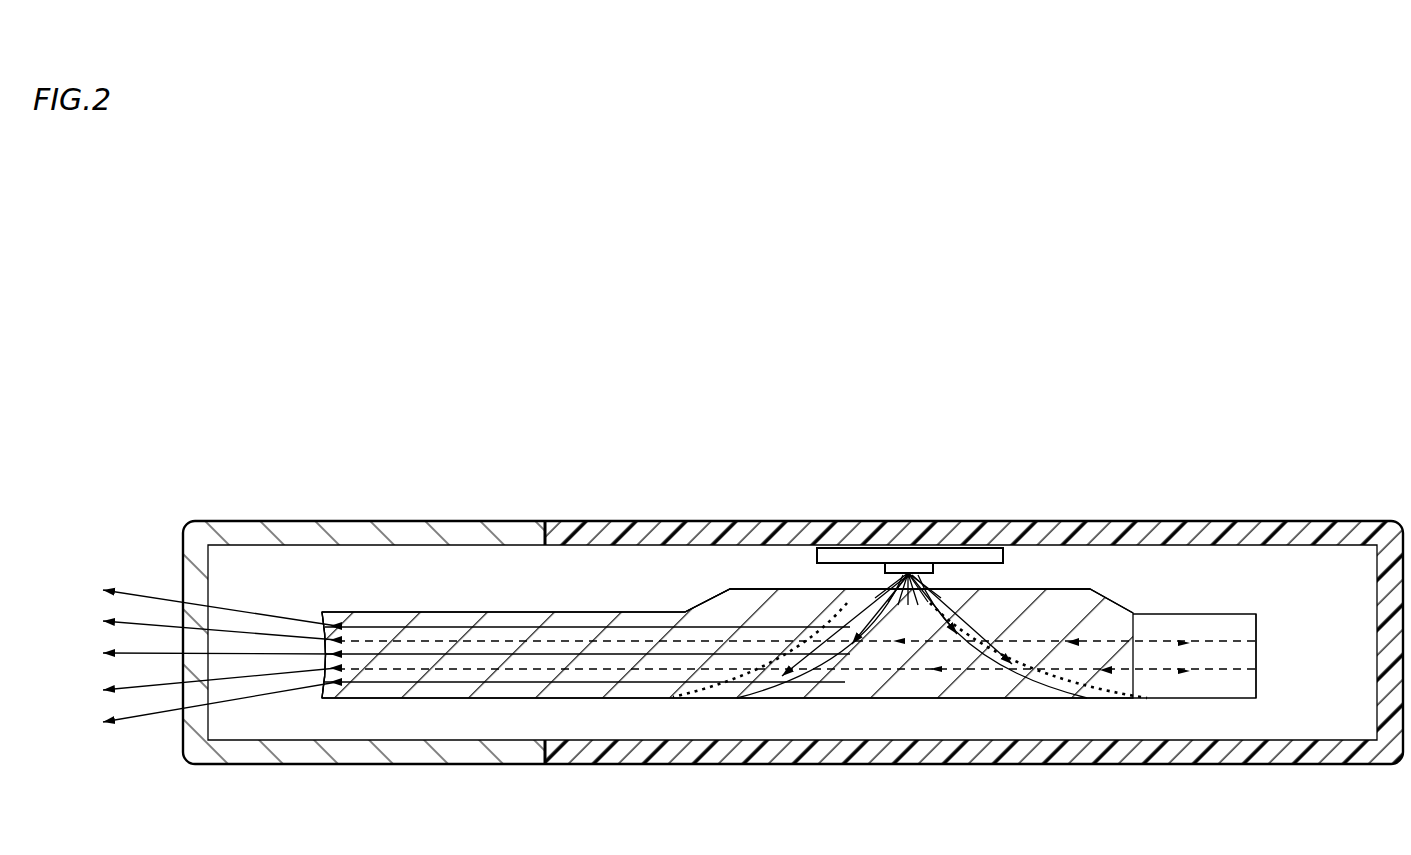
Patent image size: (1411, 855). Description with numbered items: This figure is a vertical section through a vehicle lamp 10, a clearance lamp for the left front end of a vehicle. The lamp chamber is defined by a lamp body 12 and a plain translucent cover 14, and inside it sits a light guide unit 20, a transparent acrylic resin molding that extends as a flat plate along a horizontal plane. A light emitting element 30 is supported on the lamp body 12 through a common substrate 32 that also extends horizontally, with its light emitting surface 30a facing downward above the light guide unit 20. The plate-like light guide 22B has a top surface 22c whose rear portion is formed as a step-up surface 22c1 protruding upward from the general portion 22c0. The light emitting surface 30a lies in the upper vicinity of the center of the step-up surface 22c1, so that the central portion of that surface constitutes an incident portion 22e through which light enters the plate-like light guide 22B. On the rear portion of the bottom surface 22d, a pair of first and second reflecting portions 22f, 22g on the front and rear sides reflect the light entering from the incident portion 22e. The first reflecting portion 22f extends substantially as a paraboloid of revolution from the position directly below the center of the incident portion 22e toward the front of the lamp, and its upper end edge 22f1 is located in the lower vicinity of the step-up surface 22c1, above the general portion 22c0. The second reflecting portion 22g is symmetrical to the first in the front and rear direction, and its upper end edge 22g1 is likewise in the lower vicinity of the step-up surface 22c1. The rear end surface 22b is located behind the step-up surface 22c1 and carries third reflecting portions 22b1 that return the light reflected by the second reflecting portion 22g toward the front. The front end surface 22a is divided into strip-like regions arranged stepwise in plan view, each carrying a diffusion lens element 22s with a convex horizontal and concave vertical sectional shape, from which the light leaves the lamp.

The vehicle lamp 10 is at (350, 292).
The lamp body 12 is at (1280, 520).
The plain translucent cover 14 is at (228, 516).
The light guide unit 20 is at (730, 628).
The plate-like light guide 22B is at (519, 612).
The front end surface 22a is at (330, 680).
The diffusion lens element 22s is at (330, 628).
The rear end surface 22b is at (1133, 637).
The third reflecting portion 22b1 is at (1235, 662).
The top surface 22c is at (745, 462).
The general portion 22c0 is at (610, 698).
The step-up surface 22c1 is at (752, 590).
The bottom surface 22d is at (610, 698).
The incident portion 22e is at (903, 576).
The first reflecting portion 22f is at (847, 657).
The second reflecting portion 22g is at (977, 657).
The upper end edge 22f1 is at (850, 603).
The upper end edge 22g1 is at (967, 587).
The light emitting element 30 is at (910, 585).
The light emitting surface 30a is at (922, 580).
The common substrate 32 is at (972, 550).